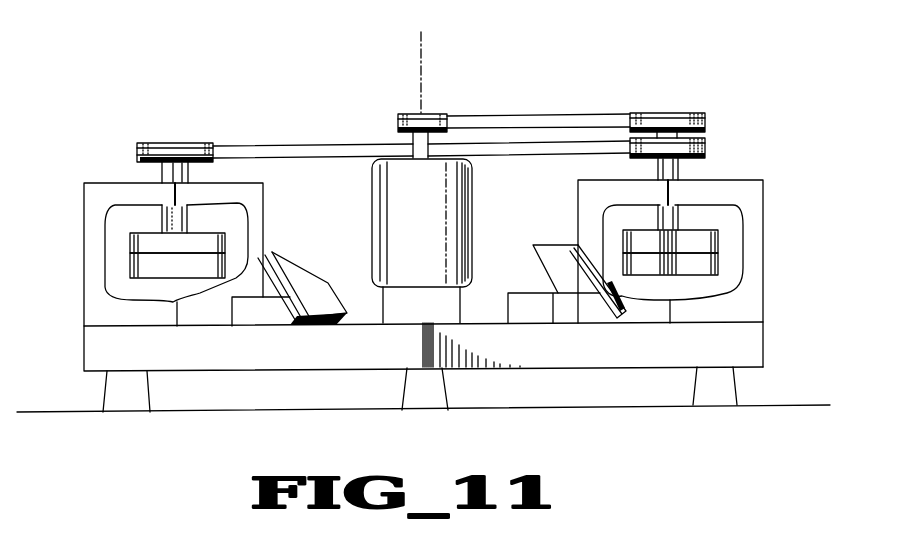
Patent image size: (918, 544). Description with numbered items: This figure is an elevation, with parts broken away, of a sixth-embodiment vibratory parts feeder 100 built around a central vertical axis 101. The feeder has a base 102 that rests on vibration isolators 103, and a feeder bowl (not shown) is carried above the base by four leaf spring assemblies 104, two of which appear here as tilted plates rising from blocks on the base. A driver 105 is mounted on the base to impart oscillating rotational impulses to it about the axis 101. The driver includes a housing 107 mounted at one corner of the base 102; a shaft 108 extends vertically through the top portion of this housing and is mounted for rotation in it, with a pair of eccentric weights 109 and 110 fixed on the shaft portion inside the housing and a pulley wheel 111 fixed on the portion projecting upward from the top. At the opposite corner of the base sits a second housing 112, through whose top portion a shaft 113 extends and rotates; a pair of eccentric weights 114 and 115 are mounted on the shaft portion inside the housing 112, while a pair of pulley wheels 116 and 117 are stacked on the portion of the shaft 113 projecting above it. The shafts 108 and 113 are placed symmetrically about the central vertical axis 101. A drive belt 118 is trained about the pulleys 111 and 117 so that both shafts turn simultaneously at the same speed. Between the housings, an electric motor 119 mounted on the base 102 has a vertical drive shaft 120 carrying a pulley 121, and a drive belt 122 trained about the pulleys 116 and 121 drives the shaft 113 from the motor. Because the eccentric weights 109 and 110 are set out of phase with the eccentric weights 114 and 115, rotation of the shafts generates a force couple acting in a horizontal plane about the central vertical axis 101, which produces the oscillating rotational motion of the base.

The vibratory parts feeder 100 is at (518, 72).
The central vertical axis 101 is at (418, 48).
The base 102 is at (88, 348).
The vibration isolators 103 is at (145, 392).
The leaf spring assemblies 104 is at (284, 256).
The driver 105 is at (380, 138).
The housing 107 is at (88, 190).
The shaft 108 is at (162, 220).
The eccentric weight 109 is at (130, 243).
The eccentric weight 110 is at (130, 263).
The pulley wheel 111 is at (140, 145).
The housing 112 is at (763, 185).
The shaft 113 is at (682, 217).
The eccentric weight 114 is at (708, 238).
The eccentric weight 115 is at (707, 265).
The pulley wheel 116 is at (706, 123).
The pulley wheel 117 is at (706, 142).
The drive belt 118 is at (242, 147).
The electric motor 119 is at (436, 204).
The vertical drive shaft 120 is at (428, 137).
The pulley 121 is at (415, 112).
The drive belt 122 is at (503, 120).